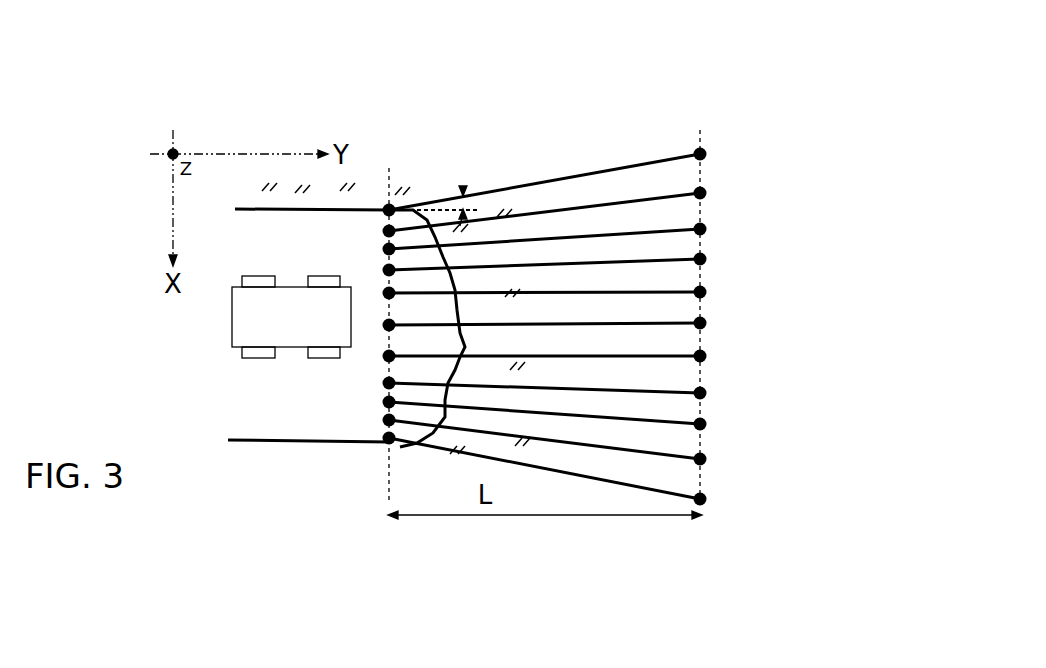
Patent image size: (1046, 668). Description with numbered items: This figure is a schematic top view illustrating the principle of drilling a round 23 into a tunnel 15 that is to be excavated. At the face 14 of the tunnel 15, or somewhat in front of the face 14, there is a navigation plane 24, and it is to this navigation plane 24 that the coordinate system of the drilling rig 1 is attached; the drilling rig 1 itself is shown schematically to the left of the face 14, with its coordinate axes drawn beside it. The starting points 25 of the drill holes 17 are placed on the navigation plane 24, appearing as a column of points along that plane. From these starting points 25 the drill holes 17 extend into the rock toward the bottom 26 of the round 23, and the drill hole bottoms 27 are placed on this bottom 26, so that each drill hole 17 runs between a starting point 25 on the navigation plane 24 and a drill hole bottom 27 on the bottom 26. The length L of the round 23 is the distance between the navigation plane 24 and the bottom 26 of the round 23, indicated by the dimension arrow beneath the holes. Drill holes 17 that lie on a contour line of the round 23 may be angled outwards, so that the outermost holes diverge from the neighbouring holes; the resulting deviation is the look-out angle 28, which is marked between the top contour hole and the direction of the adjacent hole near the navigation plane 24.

The drilling rig 1 is at (286, 332).
The face 14 is at (423, 210).
The tunnel 15 is at (286, 254).
The drill holes 17 is at (652, 392).
The round 23 is at (560, 254).
The navigation plane 24 is at (388, 143).
The starting points 25 is at (386, 382).
The bottom 26 is at (700, 119).
The drill hole bottoms 27 is at (704, 389).
The look-out angles 28 is at (441, 146).